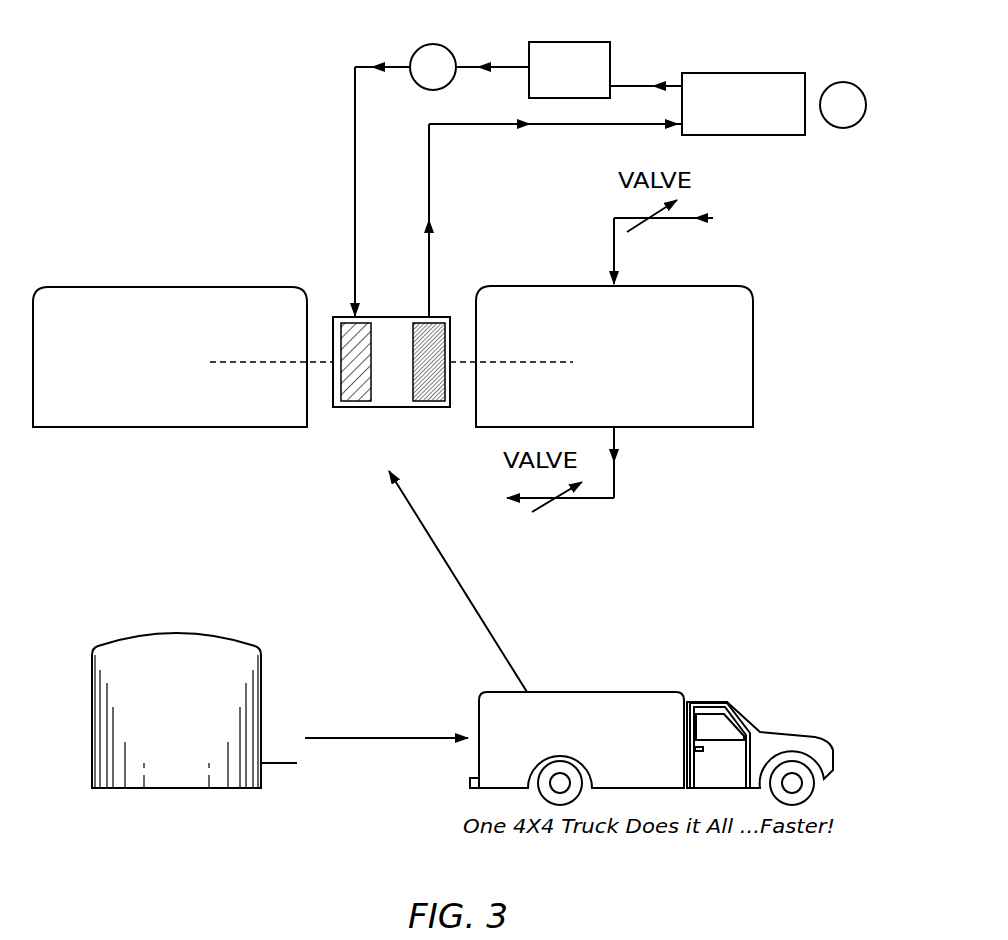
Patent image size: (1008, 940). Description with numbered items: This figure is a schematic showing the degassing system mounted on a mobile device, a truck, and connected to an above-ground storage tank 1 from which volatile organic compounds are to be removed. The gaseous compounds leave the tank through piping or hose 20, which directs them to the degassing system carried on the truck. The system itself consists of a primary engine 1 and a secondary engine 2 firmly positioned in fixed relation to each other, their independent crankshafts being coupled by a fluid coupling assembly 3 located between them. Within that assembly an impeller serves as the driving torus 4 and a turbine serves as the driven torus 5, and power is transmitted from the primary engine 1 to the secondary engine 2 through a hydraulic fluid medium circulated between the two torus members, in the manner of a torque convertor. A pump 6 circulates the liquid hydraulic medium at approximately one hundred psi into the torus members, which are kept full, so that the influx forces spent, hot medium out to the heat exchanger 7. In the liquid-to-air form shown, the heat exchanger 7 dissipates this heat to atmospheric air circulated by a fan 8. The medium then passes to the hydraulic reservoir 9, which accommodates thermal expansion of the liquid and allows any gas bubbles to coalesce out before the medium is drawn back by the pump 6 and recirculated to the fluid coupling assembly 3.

The primary engine 1 is at (93, 287).
The secondary engine 2 is at (533, 286).
The fluid coupling assembly 3 is at (407, 317).
The driving torus 4 is at (371, 366).
The driven torus 5 is at (413, 362).
The pump 6 is at (433, 90).
The heat exchanger 7 is at (745, 135).
The fan 8 is at (843, 82).
The hydraulic reservoir 9 is at (529, 75).
The piping or hose 20 is at (278, 764).